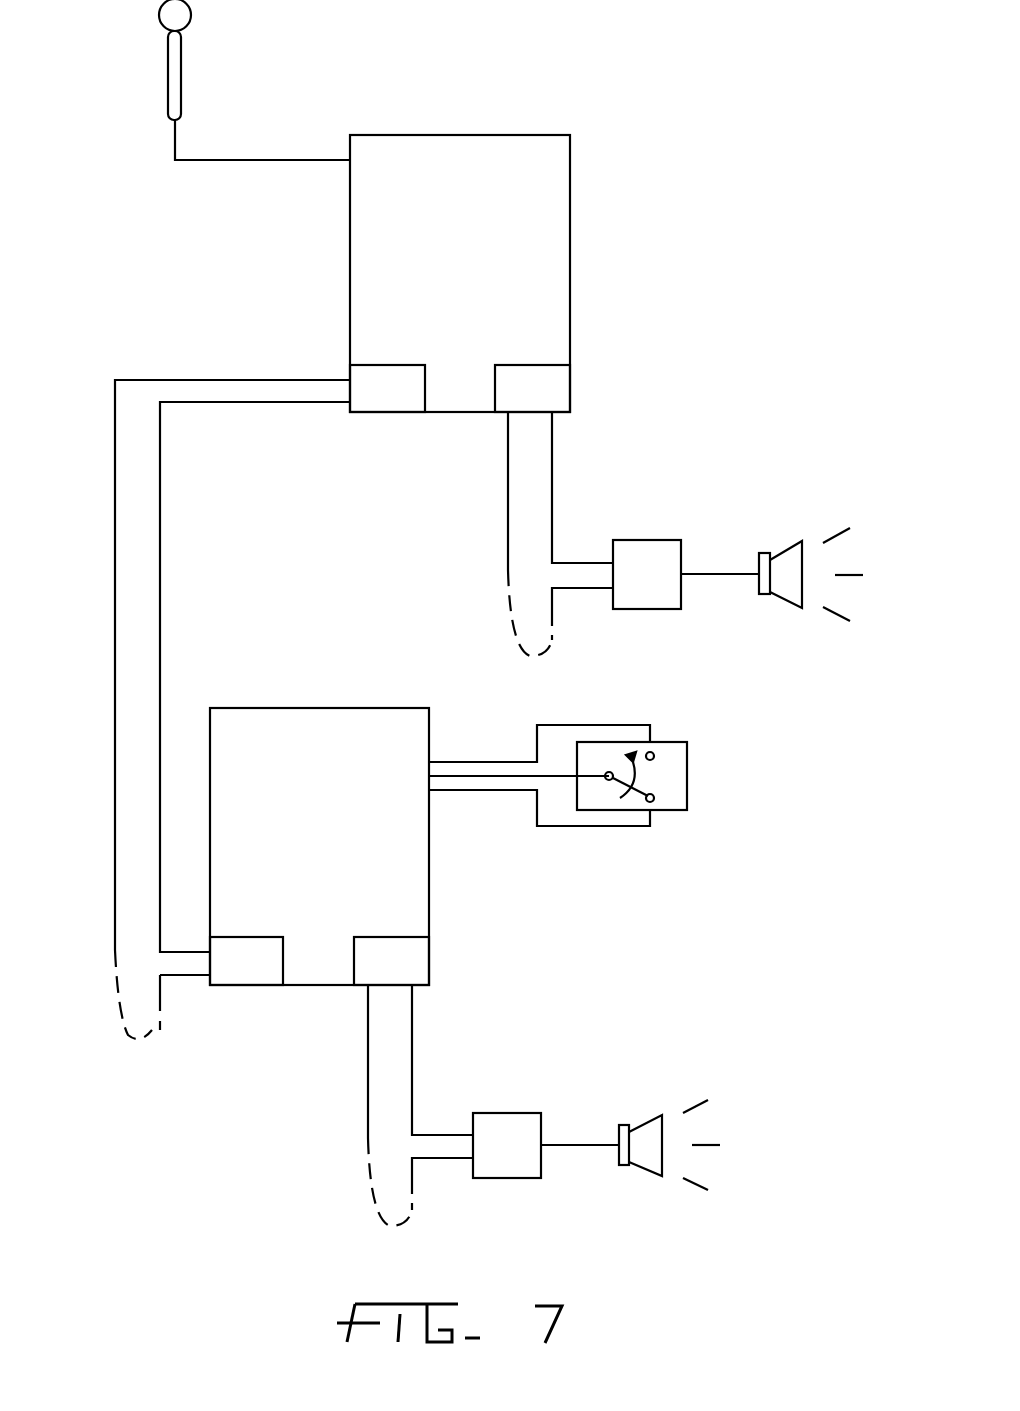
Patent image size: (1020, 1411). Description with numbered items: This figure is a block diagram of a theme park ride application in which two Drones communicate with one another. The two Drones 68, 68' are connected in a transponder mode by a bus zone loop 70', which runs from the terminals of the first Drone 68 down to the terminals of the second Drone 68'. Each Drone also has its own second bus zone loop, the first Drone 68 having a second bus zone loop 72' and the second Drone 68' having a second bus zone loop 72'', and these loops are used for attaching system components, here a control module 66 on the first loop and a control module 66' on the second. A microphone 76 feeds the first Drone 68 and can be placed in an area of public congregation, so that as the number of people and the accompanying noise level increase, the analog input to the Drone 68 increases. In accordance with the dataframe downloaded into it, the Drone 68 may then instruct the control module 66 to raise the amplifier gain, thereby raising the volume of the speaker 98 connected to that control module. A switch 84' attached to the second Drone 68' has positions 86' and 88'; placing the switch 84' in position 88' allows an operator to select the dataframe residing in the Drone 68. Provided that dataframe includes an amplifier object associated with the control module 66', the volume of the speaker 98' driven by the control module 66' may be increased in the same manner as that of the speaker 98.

The microphone 76 is at (160, 13).
The Drone 68 is at (461, 230).
The bus zone loop 70' is at (232, 667).
The second bus zone loop 72' is at (597, 515).
The control module 66 is at (647, 538).
The speaker 98 is at (772, 600).
The Drone 68' is at (319, 802).
The switch 84' is at (635, 775).
The switch position 86' is at (717, 736).
The switch position 88' is at (691, 840).
The second bus zone loop 72'' is at (456, 1086).
The control module 66' is at (507, 1108).
The speaker 98' is at (630, 1172).